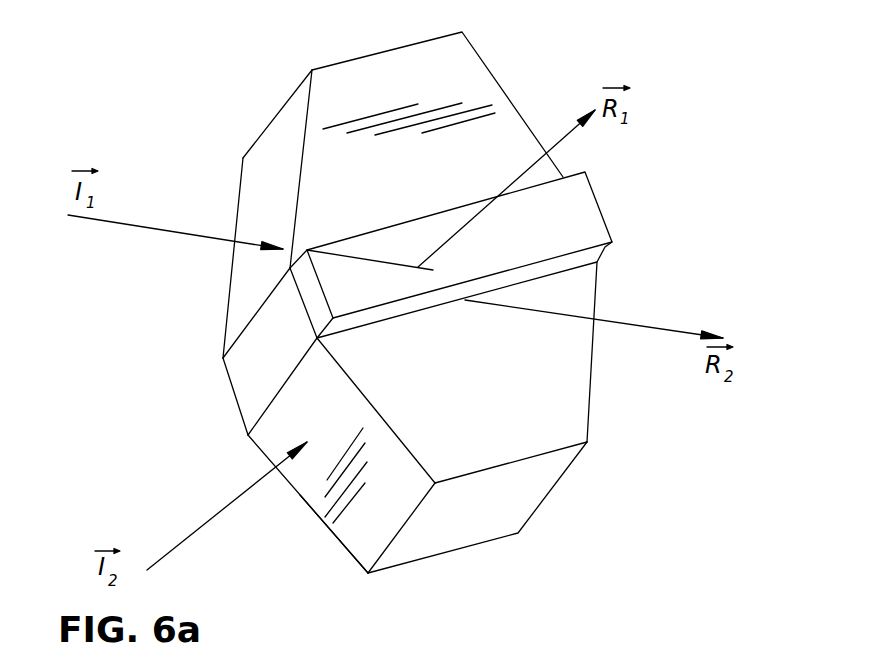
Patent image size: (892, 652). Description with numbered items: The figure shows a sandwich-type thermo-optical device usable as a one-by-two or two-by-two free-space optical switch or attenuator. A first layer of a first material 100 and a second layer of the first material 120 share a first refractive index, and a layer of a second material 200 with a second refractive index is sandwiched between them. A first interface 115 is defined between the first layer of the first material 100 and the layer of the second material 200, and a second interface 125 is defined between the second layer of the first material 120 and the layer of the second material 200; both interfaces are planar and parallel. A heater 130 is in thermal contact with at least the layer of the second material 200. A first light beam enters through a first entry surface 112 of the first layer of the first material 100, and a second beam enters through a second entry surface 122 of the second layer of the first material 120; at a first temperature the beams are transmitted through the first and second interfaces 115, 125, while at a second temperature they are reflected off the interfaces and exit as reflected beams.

The first layer of the first material 100 is at (442, 62).
The first entry surface 112 is at (260, 172).
The first interface 115 is at (223, 358).
The second layer of the first material 120 is at (462, 532).
The second entry surface 122 is at (360, 527).
The second interface 125 is at (270, 408).
The heater 130 is at (572, 223).
The layer of a second material 200 is at (255, 368).